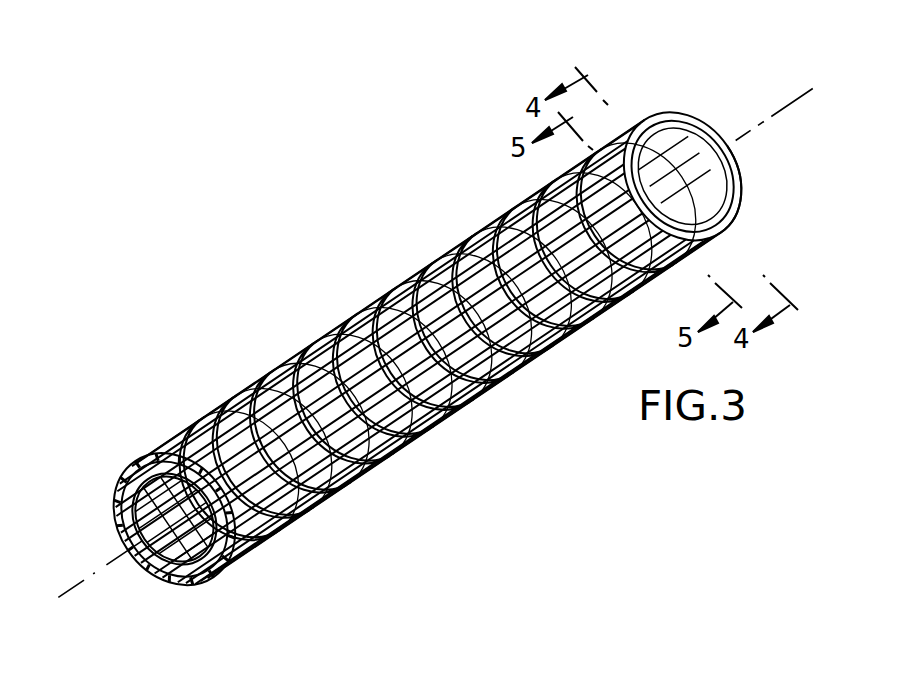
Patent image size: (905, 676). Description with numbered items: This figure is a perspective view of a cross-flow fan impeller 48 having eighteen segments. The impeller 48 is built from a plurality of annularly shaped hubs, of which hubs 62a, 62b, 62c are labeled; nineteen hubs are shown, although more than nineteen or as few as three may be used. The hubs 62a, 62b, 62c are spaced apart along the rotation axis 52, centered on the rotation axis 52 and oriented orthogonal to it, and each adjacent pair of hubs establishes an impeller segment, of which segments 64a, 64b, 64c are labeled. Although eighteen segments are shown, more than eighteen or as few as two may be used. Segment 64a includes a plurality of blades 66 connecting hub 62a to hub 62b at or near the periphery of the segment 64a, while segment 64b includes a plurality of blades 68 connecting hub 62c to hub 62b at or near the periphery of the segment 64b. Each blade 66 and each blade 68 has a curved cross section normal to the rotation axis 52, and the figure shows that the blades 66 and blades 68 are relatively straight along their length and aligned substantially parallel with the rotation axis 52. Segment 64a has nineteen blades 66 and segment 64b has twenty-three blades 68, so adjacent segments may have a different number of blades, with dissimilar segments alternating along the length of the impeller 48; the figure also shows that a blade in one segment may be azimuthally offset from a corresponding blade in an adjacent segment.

The impeller 48 is at (466, 317).
The rotation axis 52 is at (113, 557).
The hub 62a is at (717, 147).
The hub 62b is at (677, 122).
The hub 62c is at (647, 120).
The impeller segment 64a is at (735, 233).
The impeller segment 64b is at (703, 258).
The impeller segment 64c is at (577, 162).
The blades 66 is at (713, 173).
The blades 68 is at (743, 193).